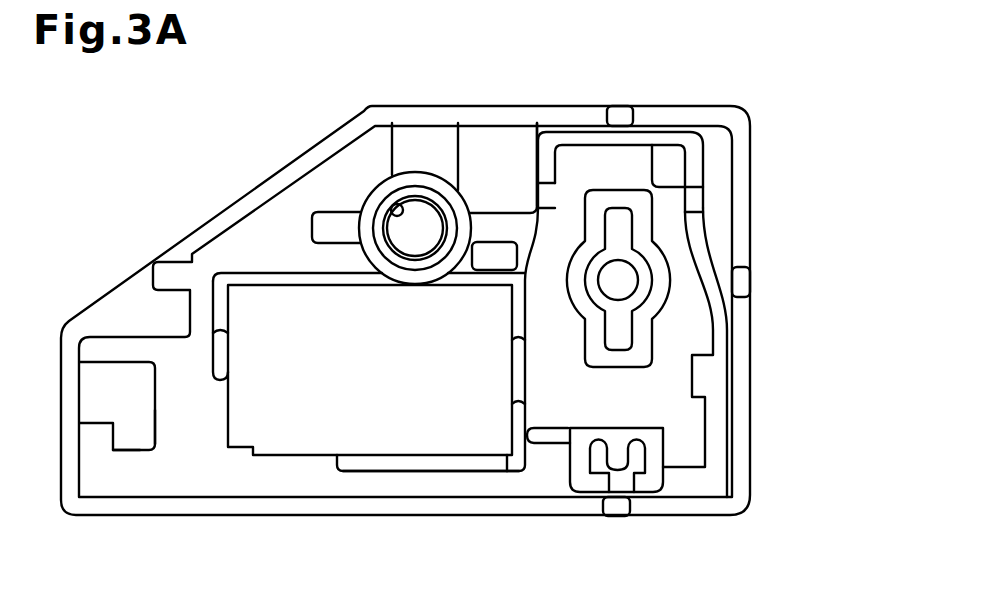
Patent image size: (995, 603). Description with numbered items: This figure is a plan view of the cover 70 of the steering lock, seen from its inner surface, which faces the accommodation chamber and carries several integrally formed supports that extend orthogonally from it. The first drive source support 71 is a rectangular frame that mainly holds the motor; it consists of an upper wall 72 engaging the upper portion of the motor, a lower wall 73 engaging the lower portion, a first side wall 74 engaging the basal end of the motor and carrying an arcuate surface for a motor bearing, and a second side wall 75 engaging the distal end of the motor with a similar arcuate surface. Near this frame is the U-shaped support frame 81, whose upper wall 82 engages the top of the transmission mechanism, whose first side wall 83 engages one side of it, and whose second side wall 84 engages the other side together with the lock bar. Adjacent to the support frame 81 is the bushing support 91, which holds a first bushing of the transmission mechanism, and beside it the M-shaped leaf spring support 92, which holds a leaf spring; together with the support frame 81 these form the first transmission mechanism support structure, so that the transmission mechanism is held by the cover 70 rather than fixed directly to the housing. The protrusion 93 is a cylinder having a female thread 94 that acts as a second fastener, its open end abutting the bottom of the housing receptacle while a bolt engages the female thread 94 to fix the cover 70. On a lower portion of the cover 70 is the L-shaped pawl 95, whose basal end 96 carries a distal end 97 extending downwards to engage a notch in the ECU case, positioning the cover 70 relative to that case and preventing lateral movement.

The cover 70 is at (118, 517).
The first drive source support 71 is at (385, 473).
The upper wall 72 is at (268, 272).
The lower wall 73 is at (473, 473).
The first side wall 74 is at (212, 300).
The second side wall 75 is at (510, 308).
The support frame 81 is at (705, 150).
The upper wall 82 is at (677, 127).
The first side wall 83 is at (532, 143).
The second side wall 84 is at (705, 175).
The bushing support 91 is at (603, 333).
The leaf spring support 92 is at (588, 482).
The protrusion 93 is at (420, 168).
The female thread 94 is at (393, 213).
The pawl 95 is at (155, 428).
The basal end 96 is at (133, 399).
The distal end 97 is at (133, 443).